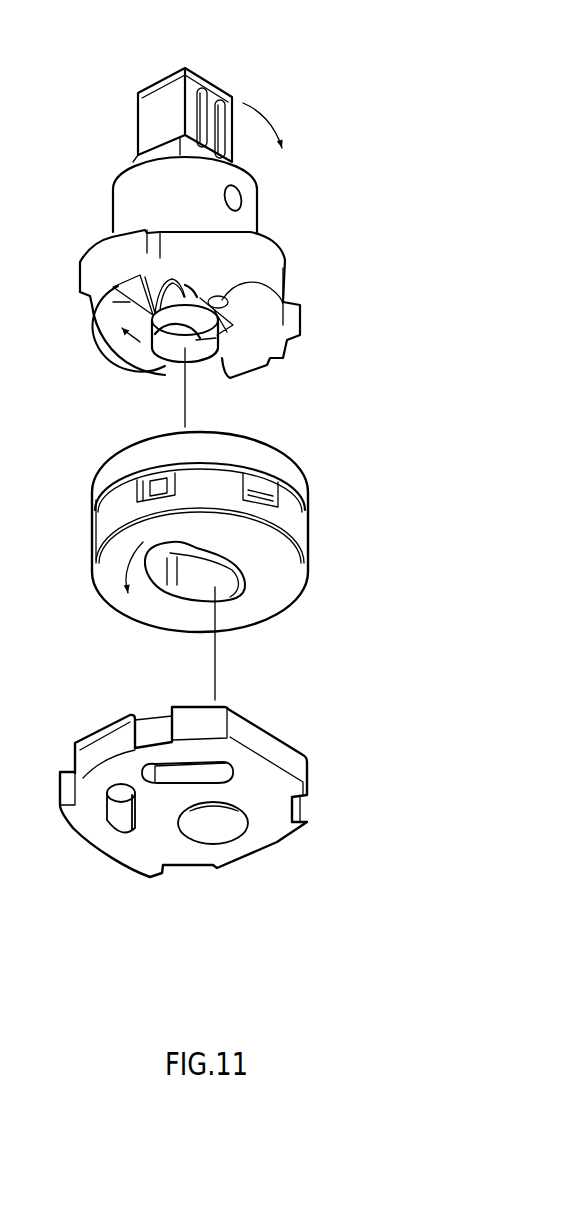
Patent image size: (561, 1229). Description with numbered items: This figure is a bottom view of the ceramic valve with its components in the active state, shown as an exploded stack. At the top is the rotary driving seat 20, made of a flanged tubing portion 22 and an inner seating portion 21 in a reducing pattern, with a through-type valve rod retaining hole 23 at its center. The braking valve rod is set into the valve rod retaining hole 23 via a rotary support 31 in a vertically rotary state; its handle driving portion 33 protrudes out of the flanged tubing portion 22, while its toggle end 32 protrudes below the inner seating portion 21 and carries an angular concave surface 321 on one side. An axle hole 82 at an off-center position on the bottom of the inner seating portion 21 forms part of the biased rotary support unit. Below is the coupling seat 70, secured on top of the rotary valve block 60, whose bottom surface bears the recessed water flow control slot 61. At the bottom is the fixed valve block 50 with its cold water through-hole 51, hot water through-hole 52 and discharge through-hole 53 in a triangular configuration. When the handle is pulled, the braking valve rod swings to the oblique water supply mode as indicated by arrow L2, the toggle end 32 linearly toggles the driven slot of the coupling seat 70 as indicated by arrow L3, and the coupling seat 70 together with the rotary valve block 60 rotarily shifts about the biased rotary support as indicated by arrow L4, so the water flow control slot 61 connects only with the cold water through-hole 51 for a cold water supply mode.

The rotary driving seat 20 is at (32, 192).
The inner seating portion 21 is at (123, 253).
The flanged tubing portion 22 is at (132, 196).
The valve rod retaining hole 23 is at (90, 318).
The rotary support 31 is at (233, 202).
The toggle end 32 is at (182, 343).
The angular concave surface 321 is at (220, 368).
The handle driving portion 33 is at (212, 90).
The axle hole 82 is at (227, 302).
The rotary valve block 60 is at (296, 512).
The coupling seat 70 is at (246, 450).
The water flow control slot 61 is at (228, 585).
The fixed valve block 50 is at (273, 840).
The cold water through-hole 51 is at (115, 812).
The hot water through-hole 52 is at (200, 770).
The discharge through-hole 53 is at (203, 835).
The arrow L2 is at (243, 103).
The arrow L3 is at (138, 345).
The arrow L4 is at (115, 557).